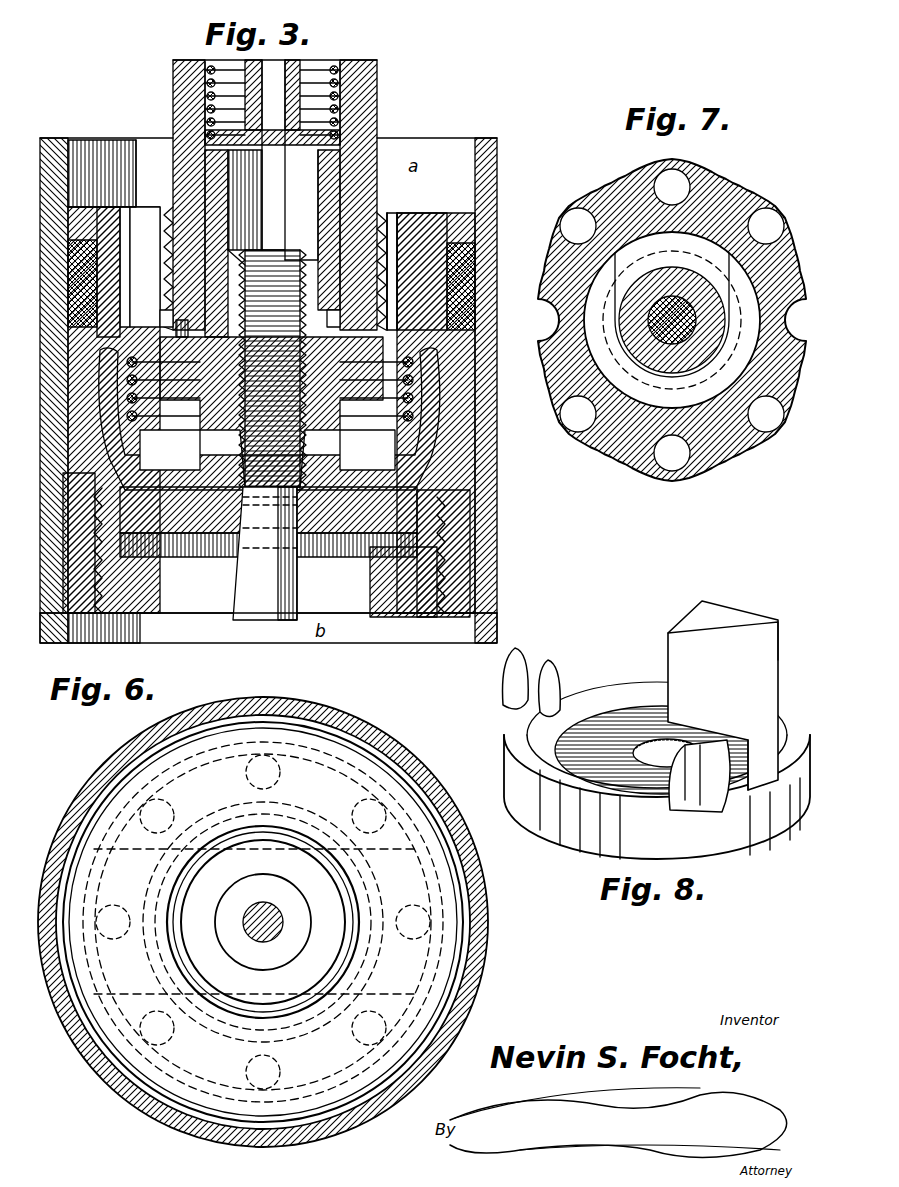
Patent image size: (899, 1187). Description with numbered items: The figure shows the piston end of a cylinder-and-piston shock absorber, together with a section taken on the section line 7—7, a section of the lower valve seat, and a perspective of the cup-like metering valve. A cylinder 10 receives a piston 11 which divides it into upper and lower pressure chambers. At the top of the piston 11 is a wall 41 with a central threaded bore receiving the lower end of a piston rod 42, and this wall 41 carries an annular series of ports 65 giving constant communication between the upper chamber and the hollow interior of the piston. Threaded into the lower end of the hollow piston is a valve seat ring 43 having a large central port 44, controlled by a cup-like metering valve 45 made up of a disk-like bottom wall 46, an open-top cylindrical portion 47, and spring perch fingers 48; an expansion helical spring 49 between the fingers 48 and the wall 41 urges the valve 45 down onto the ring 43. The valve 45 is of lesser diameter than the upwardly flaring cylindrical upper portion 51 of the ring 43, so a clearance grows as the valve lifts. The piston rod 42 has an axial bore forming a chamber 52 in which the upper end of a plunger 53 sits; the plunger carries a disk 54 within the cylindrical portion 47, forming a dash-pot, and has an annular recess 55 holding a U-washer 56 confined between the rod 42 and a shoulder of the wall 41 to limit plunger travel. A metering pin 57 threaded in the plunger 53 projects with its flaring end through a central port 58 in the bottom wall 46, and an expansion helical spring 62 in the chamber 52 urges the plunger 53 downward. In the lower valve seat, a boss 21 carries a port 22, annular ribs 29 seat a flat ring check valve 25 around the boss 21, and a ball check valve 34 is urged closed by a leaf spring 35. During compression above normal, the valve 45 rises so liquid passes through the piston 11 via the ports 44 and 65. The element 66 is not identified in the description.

In FIG. 3, the passage 7 is at (340, 328).
In FIG. 3, the cylinder 10 is at (485, 160).
In FIG. 6, the cylinder 10 is at (485, 942).
In FIG. 3, the piston 11 is at (470, 222).
In FIG. 6, the boss 21 is at (248, 850).
In FIG. 6, the port 22 is at (255, 958).
In FIG. 6, the check valve 25 is at (348, 780).
In FIG. 6, the annular ribs 29 is at (210, 1025).
In FIG. 6, the check valve 34 is at (289, 922).
In FIG. 6, the spring 35 is at (254, 922).
In FIG. 3, the wall 41 is at (447, 272).
In FIG. 7, the wall 41 is at (742, 447).
In FIG. 3, the piston rod 42 is at (377, 122).
In FIG. 3, the valve seat ring 43 is at (445, 575).
In FIG. 3, the central port 44 is at (310, 570).
In FIG. 3, the metering valve 45 is at (268, 543).
In FIG. 8, the metering valve 45 is at (757, 840).
In FIG. 8, the bottom wall 46 is at (602, 782).
In FIG. 3, the cylindrical portion 47 is at (425, 470).
In FIG. 8, the cylindrical portion 47 is at (615, 680).
In FIG. 3, the spring perch fingers 48 is at (267, 450).
In FIG. 8, the spring perch fingers 48 is at (778, 690).
In FIG. 3, the expansion helical spring 49 is at (414, 385).
In FIG. 3, the cylindrical upper portion 51 is at (445, 503).
In FIG. 3, the chamber 52 is at (205, 96).
In FIG. 3, the plunger 53 is at (262, 195).
In FIG. 7, the plunger 53 is at (640, 316).
In FIG. 3, the disk 54 is at (372, 475).
In FIG. 3, the annular recess 55 is at (386, 300).
In FIG. 3, the U-washer 56 is at (175, 300).
In FIG. 7, the U-washer 56 is at (672, 332).
In FIG. 3, the metering pin 57 is at (243, 598).
In FIG. 7, the metering pin 57 is at (672, 300).
In FIG. 3, the central port 58 is at (310, 515).
In FIG. 8, the central port 58 is at (665, 745).
In FIG. 3, the expansion helical spring 62 is at (338, 83).
In FIG. 3, the ports 65 is at (412, 230).
In FIG. 7, the ports 65 is at (772, 190).
In FIG. 3, the liner 66 is at (205, 185).